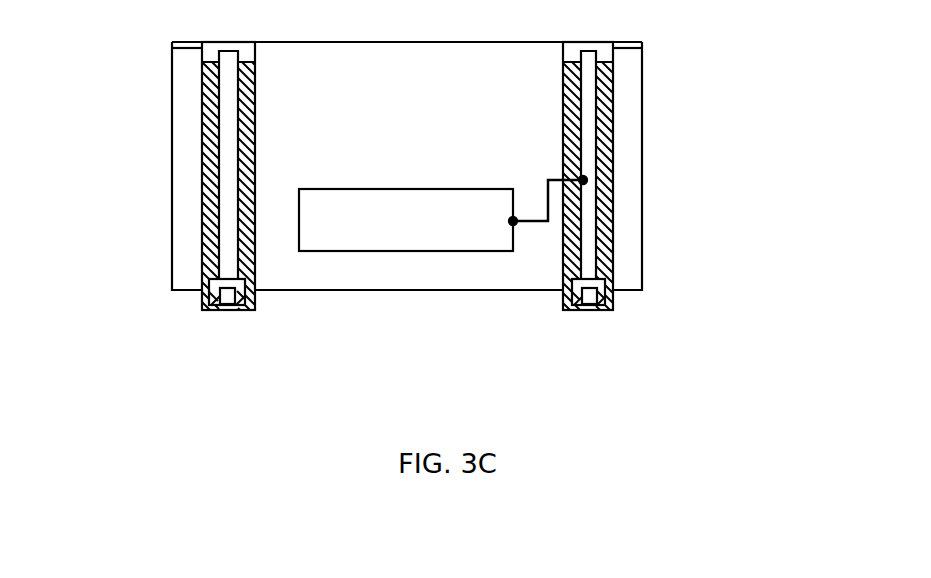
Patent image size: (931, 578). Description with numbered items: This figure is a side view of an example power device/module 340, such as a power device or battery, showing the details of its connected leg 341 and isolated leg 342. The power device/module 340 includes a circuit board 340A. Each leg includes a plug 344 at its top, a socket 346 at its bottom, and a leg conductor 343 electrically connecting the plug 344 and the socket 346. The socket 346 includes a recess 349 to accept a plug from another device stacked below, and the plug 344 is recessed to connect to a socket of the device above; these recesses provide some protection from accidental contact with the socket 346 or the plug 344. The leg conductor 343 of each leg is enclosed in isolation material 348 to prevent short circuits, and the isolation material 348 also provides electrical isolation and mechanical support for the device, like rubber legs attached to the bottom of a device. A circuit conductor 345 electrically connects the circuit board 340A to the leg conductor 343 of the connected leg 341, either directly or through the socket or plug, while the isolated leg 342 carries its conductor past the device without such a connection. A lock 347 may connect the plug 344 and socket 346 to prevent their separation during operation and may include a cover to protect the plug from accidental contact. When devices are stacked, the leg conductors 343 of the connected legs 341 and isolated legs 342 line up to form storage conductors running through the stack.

The power device/module 340 is at (427, 106).
The circuit board 340A is at (435, 227).
The connected leg 341 is at (613, 158).
The isolated leg 342 is at (207, 147).
The leg conductor 343 is at (613, 222).
The plug 344 is at (208, 57).
The circuit conductor 345 is at (523, 223).
The socket 346 is at (213, 292).
The lock 347 is at (632, 50).
The isolation material 348 is at (207, 208).
The recess 349 is at (227, 300).